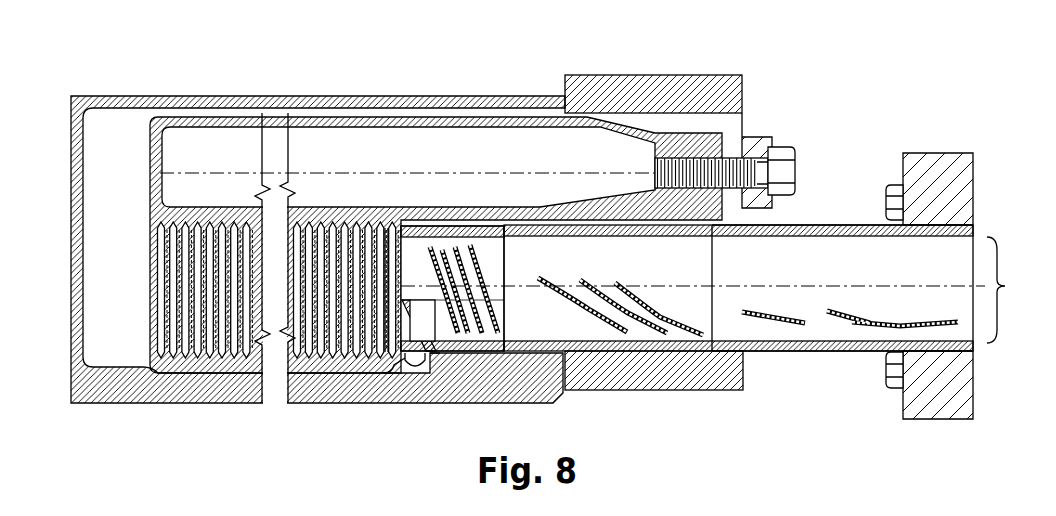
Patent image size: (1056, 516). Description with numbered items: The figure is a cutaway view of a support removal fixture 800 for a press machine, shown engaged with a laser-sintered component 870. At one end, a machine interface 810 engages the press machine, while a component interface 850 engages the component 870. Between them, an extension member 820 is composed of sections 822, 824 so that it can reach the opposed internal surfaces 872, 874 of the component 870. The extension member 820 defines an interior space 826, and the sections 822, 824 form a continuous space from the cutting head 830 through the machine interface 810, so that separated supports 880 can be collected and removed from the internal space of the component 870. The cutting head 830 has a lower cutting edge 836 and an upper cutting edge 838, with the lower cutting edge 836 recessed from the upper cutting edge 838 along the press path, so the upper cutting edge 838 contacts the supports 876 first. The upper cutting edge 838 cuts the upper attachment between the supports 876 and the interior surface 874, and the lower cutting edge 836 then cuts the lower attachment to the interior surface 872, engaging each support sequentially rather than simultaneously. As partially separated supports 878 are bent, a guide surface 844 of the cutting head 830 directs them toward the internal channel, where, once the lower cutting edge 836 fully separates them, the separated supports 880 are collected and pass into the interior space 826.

The support removal fixture 800 is at (596, 68).
The machine interface 810 is at (936, 153).
The extension member 820 is at (830, 224).
The section 822 is at (615, 390).
The section 824 is at (787, 352).
The interior space 826 is at (1019, 290).
The cutting head 830 is at (478, 226).
The lower cutting edge 836 is at (432, 354).
The upper cutting edge 838 is at (397, 234).
The guide surface 844 is at (400, 300).
The component interface 850 is at (677, 75).
The laser-sintered component 870 is at (380, 97).
The interior surface 872 is at (432, 354).
The interior surface 874 is at (418, 225).
The supports 876 is at (262, 373).
The partially separated supports 878 is at (414, 368).
The separated supports 880 is at (490, 257).